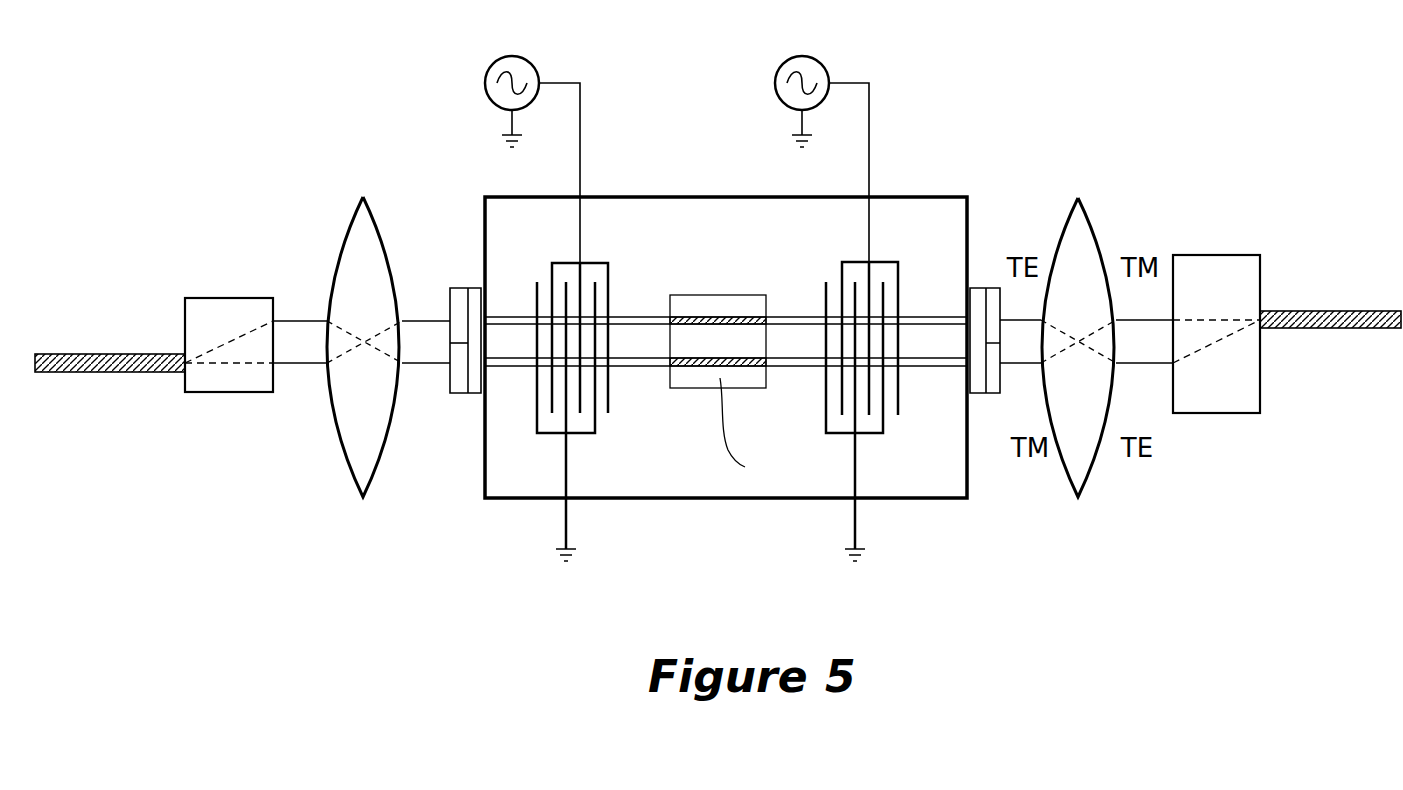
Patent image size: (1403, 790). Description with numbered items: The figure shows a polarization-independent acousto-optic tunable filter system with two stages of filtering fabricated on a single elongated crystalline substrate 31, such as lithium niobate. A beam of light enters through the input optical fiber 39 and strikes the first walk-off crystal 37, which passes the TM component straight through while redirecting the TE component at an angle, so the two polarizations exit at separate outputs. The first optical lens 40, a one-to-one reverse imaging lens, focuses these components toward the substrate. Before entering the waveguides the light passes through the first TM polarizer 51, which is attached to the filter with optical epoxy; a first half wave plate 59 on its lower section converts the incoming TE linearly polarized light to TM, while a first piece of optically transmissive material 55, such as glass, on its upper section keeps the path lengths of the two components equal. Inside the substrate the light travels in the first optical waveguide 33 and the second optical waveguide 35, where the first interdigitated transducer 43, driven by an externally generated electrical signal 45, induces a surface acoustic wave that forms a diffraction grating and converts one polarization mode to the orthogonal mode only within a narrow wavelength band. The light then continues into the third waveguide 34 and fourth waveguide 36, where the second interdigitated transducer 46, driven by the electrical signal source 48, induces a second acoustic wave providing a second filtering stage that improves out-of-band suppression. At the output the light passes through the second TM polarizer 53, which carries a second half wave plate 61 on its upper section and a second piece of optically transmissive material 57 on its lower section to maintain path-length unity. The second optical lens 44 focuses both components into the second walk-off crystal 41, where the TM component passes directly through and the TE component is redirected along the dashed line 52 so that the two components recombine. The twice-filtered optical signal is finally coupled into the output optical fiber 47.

The crystalline substrate 31 is at (637, 498).
The first optical waveguide 33 is at (633, 315).
The third waveguide 34 is at (797, 313).
The second optical waveguide 35 is at (638, 368).
The fourth waveguide 36 is at (800, 367).
The first walk-off crystal 37 is at (208, 310).
The input optical fiber 39 is at (83, 372).
The first optical lens 40 is at (358, 230).
The second walk-off crystal 41 is at (1245, 361).
The first interdigitated transducer 43 is at (590, 272).
The second optical lens 44 is at (1083, 240).
The externally-generated electrical signal 45 is at (490, 67).
The second interdigitated transducer 46 is at (882, 272).
The output optical fiber 47 is at (1340, 312).
The externally-generated electrical signal source 48 is at (780, 67).
The first TM polarizer 51 is at (477, 393).
The dashed line 52 is at (1223, 340).
The second TM polarizer 53 is at (977, 393).
The first piece of optically transmissive material 55 is at (435, 376).
The second piece of optically transmissive material 57 is at (993, 393).
The first half wave plate 59 is at (457, 393).
The second half wave plate 61 is at (977, 297).